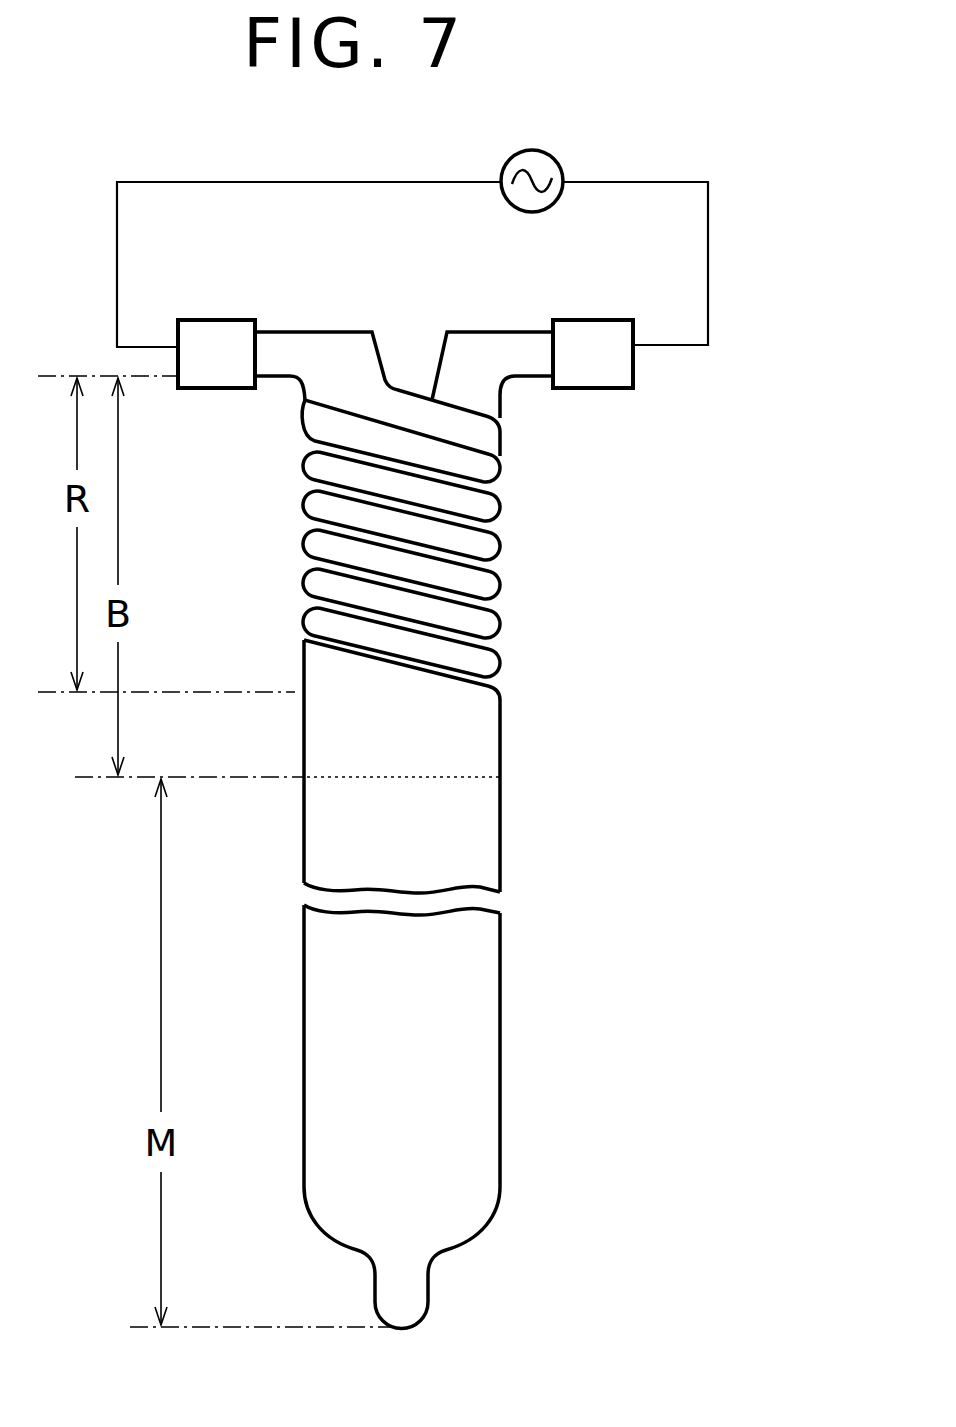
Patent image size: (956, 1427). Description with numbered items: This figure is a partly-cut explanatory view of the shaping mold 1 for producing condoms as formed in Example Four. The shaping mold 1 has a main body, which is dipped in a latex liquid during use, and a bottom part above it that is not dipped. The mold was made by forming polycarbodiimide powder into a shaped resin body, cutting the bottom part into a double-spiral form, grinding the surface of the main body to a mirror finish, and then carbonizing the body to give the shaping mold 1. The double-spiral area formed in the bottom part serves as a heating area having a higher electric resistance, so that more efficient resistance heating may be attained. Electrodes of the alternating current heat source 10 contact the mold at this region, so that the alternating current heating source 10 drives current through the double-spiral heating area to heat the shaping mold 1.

The shaping mold 1 is at (503, 837).
The alternating current heating source 10 is at (543, 160).